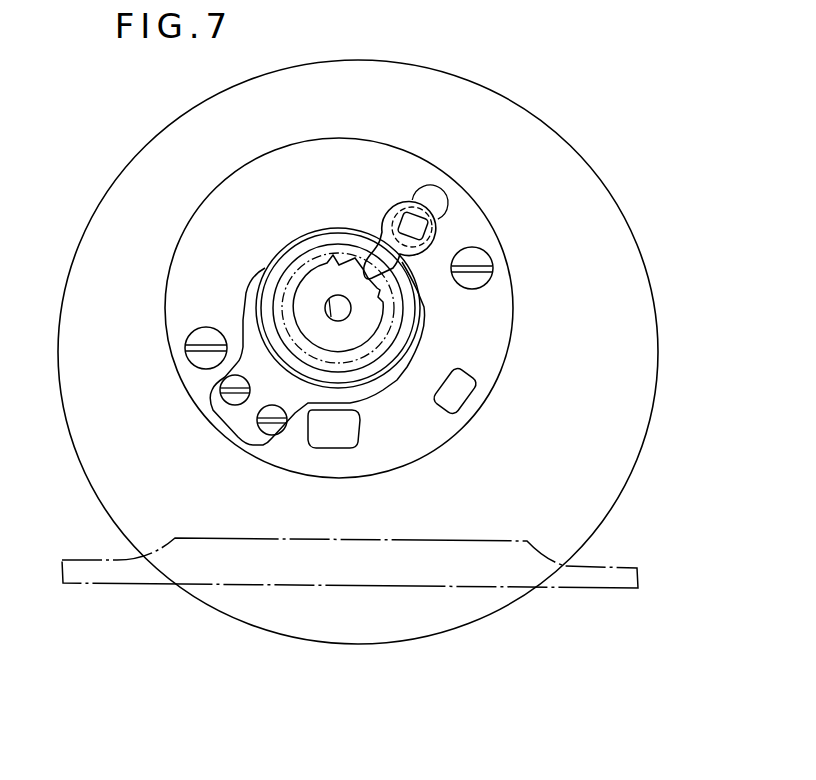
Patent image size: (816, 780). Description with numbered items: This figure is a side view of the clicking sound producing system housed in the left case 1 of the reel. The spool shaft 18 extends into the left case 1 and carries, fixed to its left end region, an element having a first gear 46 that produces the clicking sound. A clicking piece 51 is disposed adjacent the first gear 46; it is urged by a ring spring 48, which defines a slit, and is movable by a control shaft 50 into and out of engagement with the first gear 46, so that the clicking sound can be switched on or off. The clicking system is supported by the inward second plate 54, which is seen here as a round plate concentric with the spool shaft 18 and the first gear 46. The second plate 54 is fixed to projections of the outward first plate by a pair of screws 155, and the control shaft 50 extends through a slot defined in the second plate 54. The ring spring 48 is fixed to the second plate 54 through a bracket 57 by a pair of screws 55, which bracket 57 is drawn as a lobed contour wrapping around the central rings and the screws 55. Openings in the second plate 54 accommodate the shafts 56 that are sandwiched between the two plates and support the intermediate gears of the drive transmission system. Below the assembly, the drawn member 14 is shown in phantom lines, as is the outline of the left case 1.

The left case 1 is at (646, 266).
The battery / plate member 14 is at (454, 540).
The spool shaft 18 is at (345, 309).
The first gear 46 is at (333, 260).
The ring spring 48 is at (277, 258).
The control shaft 50 is at (410, 222).
The clicking piece 51 is at (387, 207).
The second plate 54 is at (500, 363).
The screws 55 is at (230, 398).
The shafts 56 is at (336, 440).
The bracket 57 is at (245, 417).
The screws 155 is at (482, 260).